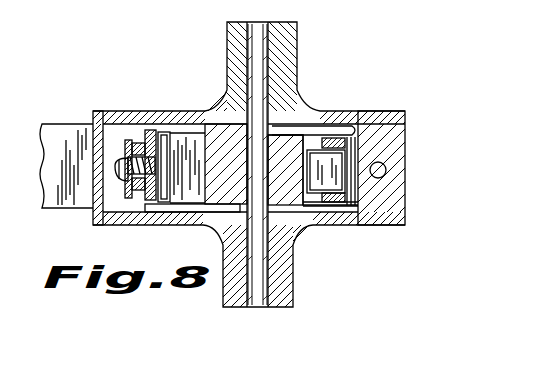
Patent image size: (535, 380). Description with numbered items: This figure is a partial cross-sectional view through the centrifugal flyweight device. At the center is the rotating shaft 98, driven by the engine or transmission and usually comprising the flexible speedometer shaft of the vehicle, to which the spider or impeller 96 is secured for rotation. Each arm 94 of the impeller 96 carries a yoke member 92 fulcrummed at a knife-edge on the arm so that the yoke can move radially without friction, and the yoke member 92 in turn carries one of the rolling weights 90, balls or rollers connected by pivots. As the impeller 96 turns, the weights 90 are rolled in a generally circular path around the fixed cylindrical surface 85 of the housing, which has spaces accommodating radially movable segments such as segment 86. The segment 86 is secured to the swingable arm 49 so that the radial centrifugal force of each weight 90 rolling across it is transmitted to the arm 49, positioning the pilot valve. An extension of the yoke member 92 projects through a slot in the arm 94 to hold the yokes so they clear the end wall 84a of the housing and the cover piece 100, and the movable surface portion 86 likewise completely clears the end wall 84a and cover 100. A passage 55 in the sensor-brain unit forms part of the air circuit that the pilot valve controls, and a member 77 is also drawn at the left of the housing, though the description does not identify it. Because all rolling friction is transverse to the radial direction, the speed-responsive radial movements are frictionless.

The swingable arm 49 is at (125, 143).
The passage 55 is at (380, 167).
The shaft 77 is at (97, 213).
The end wall 84a is at (325, 118).
The cylindrical surface 85 is at (353, 132).
The segment 86 is at (148, 202).
The rolling weights 90 is at (345, 181).
The yoke member 92 is at (347, 197).
The arm 94 is at (184, 147).
The spider or impeller 96 is at (215, 143).
The rotating shaft 98 is at (265, 118).
The cover piece 100 is at (205, 212).